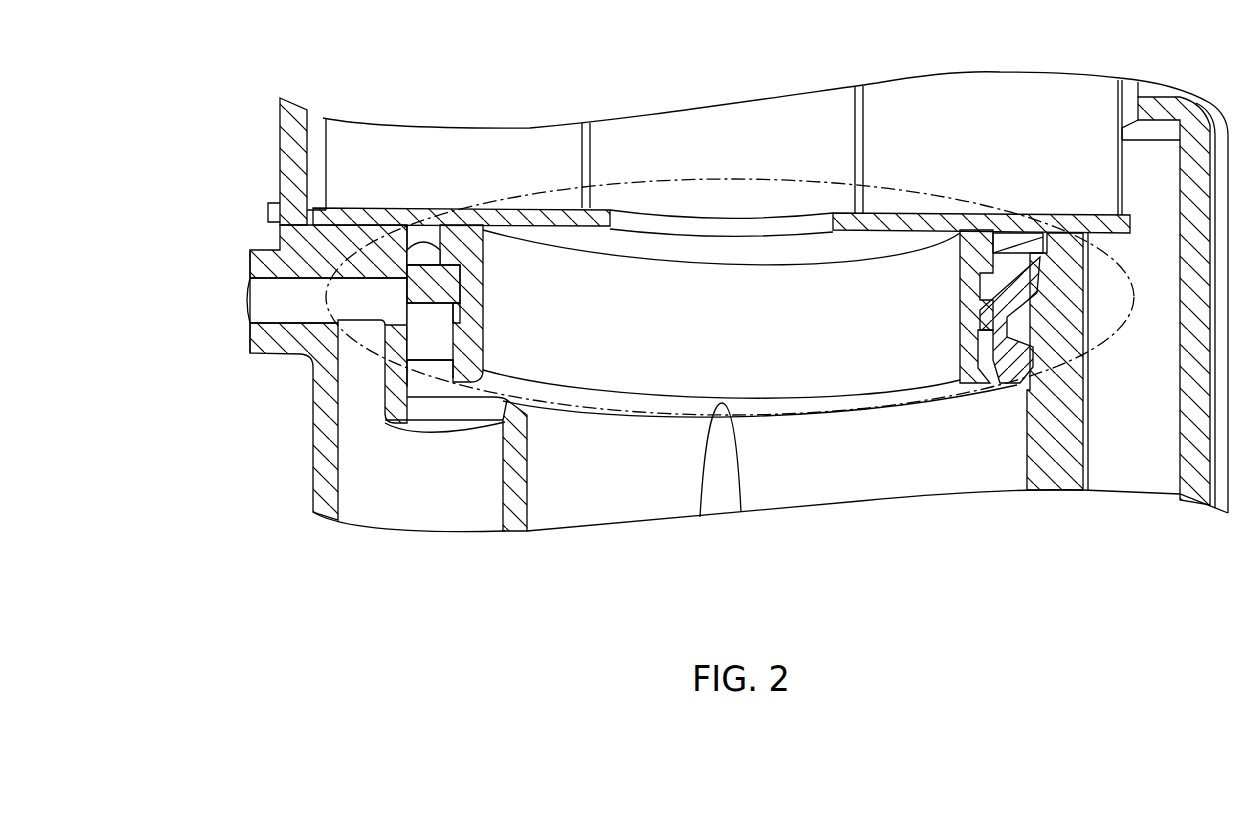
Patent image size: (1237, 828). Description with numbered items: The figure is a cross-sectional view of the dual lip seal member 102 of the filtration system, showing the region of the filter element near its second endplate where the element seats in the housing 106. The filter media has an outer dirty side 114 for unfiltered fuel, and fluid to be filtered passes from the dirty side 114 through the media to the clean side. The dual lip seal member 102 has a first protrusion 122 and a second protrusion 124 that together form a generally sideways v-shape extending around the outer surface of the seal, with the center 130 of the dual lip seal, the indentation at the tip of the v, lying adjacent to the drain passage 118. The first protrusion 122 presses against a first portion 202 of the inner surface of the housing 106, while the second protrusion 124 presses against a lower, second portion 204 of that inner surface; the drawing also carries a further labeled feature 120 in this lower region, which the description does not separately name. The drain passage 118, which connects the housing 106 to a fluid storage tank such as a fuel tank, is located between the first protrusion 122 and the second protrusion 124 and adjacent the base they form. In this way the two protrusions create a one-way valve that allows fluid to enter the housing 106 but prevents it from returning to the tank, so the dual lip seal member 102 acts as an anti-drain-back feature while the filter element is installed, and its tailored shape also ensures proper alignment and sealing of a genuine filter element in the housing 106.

The dual lip seal member 102 is at (957, 200).
The housing 106 is at (280, 173).
The dirty side 114 is at (312, 155).
The drain passage 118 is at (392, 300).
The lower housing portion 120 is at (457, 317).
The first protrusion 122 is at (412, 278).
The second protrusion 124 is at (442, 320).
The center of the dual lip seal 130 is at (410, 300).
The first portion of the inner surface of the housing 202 is at (407, 225).
The second portion of the inner surface of the housing 204 is at (420, 347).